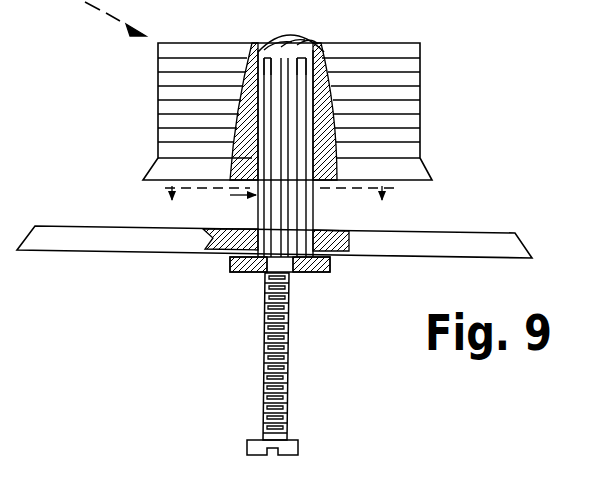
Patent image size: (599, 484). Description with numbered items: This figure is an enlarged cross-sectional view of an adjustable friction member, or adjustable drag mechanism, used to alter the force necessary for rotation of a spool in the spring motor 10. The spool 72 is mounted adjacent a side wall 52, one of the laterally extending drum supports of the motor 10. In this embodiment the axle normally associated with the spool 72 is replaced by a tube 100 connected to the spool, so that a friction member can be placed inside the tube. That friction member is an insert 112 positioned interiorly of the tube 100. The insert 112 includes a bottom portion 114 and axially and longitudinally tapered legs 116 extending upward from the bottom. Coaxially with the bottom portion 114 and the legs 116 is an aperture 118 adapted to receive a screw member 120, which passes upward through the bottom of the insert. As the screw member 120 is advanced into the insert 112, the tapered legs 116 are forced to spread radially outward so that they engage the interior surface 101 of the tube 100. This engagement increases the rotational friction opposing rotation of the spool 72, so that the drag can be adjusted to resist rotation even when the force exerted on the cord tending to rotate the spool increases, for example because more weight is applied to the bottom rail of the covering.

The spool 72 is at (410, 106).
The tube 100 is at (314, 208).
The interior surface 101 is at (270, 48).
The tapered legs 116 is at (305, 52).
The motor 10 is at (281, 204).
The insert 112 is at (224, 196).
The side wall 52 is at (113, 248).
The bottom portion 114 is at (312, 273).
The aperture 118 is at (268, 274).
The screw member 120 is at (290, 380).